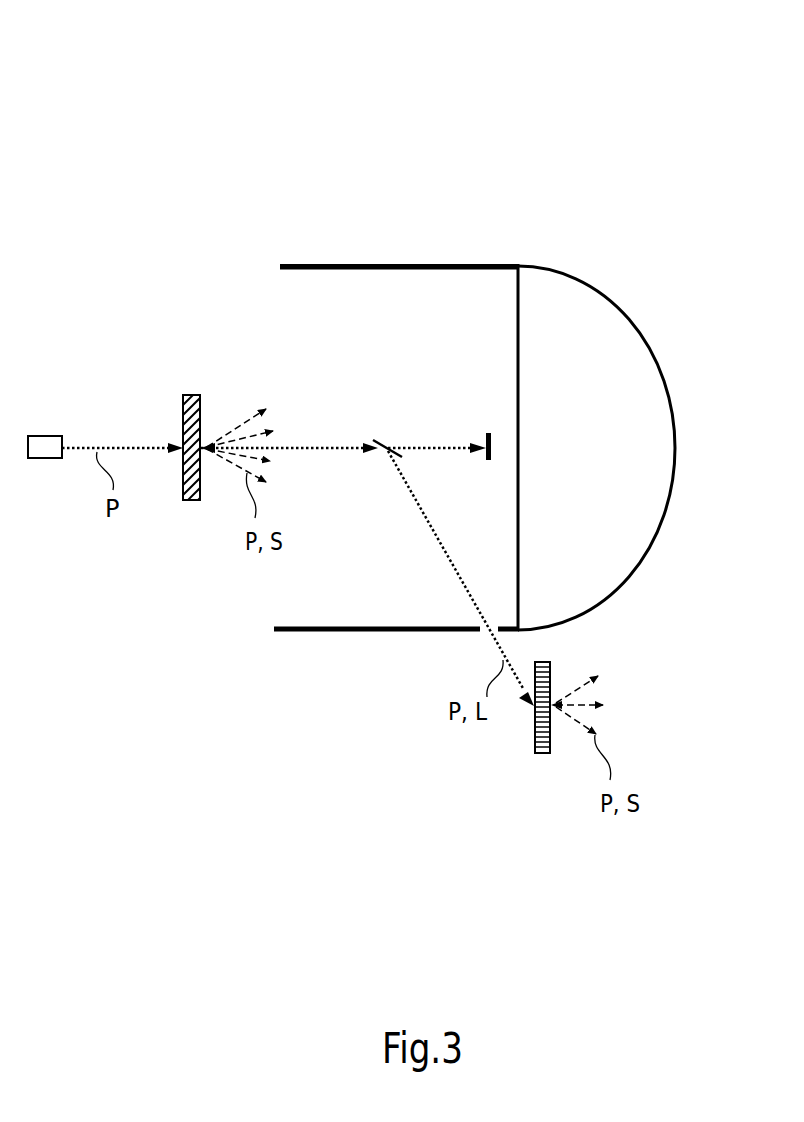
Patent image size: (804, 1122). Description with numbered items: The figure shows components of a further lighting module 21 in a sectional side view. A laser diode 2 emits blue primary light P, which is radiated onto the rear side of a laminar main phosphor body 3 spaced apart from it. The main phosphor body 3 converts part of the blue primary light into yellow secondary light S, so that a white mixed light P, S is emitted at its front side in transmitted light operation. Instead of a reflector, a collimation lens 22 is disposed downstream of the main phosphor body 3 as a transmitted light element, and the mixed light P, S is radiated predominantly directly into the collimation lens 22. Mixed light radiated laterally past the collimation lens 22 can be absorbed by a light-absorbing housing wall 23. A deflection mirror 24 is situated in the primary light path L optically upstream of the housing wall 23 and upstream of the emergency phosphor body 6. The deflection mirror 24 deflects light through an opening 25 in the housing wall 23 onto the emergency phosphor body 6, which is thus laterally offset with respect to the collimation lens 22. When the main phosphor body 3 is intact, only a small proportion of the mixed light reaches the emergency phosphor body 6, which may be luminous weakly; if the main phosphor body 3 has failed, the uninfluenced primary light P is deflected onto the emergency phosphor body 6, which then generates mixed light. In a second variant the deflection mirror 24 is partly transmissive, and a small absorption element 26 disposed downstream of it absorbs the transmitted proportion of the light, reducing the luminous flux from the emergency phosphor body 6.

The lighting module 21 is at (188, 104).
The laser diode 2 is at (45, 435).
The main phosphor body 3 is at (192, 395).
The collimation lens 22 is at (622, 308).
The light-absorbing housing wall 23 is at (411, 262).
The deflection mirror 24 is at (379, 441).
The opening 25 is at (497, 620).
The absorption element 26 is at (488, 432).
The emergency phosphor body 6 is at (543, 753).